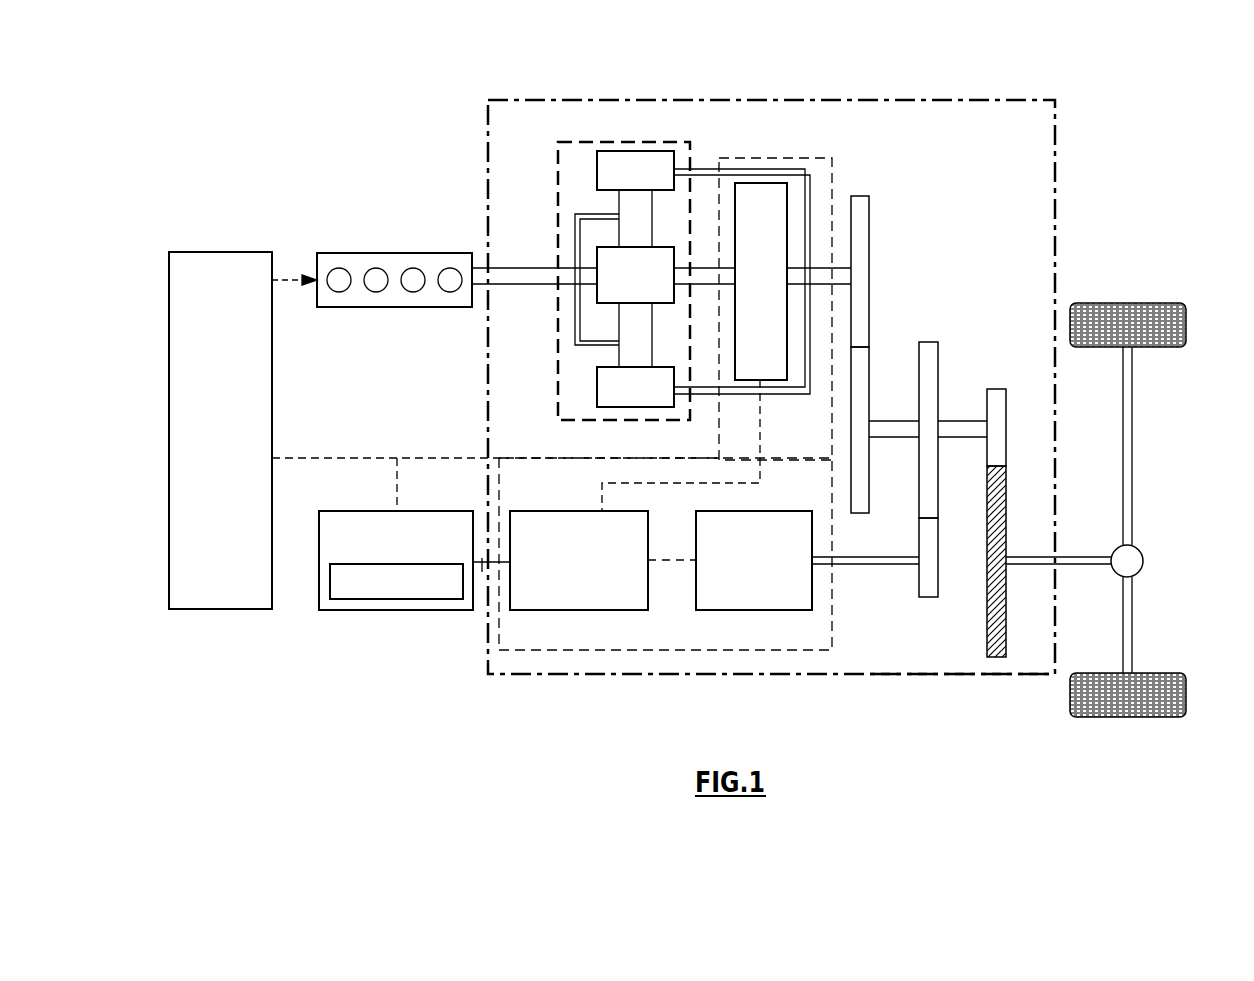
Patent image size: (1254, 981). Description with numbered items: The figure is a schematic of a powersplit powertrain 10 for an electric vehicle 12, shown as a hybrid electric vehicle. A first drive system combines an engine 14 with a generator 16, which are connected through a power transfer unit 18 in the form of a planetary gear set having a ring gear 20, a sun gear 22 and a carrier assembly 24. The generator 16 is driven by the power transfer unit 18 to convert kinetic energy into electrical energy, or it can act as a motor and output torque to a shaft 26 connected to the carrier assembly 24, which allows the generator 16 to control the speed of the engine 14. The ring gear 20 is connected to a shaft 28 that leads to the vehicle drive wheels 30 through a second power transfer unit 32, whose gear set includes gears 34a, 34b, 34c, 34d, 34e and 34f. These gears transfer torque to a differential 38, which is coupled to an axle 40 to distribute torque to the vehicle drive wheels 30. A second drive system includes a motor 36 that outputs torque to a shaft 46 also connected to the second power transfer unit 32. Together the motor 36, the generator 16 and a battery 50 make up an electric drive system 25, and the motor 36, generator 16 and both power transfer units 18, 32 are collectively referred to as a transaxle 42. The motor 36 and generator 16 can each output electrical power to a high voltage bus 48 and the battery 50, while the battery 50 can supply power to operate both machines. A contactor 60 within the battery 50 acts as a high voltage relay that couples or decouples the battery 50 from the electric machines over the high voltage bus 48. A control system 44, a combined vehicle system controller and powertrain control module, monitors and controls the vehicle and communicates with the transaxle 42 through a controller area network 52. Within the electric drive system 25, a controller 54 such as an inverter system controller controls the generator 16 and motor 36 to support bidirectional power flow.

The powertrain 10 is at (425, 170).
The electric vehicle 12 is at (880, 92).
The engine 14 is at (356, 307).
The generator 16 is at (763, 183).
The power transfer unit 18 is at (556, 226).
The ring gear 20 is at (597, 172).
The sun gear 22 is at (597, 262).
The carrier assembly 24 is at (575, 333).
The electric drive system 25 is at (587, 651).
The shaft 26 is at (710, 290).
The shaft 28 is at (841, 262).
The vehicle drive wheels 30 is at (1139, 295).
The second power transfer unit 32 is at (947, 453).
The gear 34a is at (869, 228).
The gear 34b is at (858, 513).
The gear 34c is at (938, 356).
The gear 34d is at (926, 597).
The gear 34e is at (994, 389).
The gear 34f is at (995, 657).
The motor 36 is at (762, 610).
The differential 38 is at (1133, 556).
The axle 40 is at (1077, 556).
The transaxle 42 is at (936, 677).
The control system 44 is at (216, 252).
The shaft 46 is at (870, 564).
The high voltage bus 48 is at (482, 573).
The battery 50 is at (395, 610).
The controller area network 52 is at (385, 456).
The controller 54 is at (578, 511).
The contactor 60 is at (340, 599).